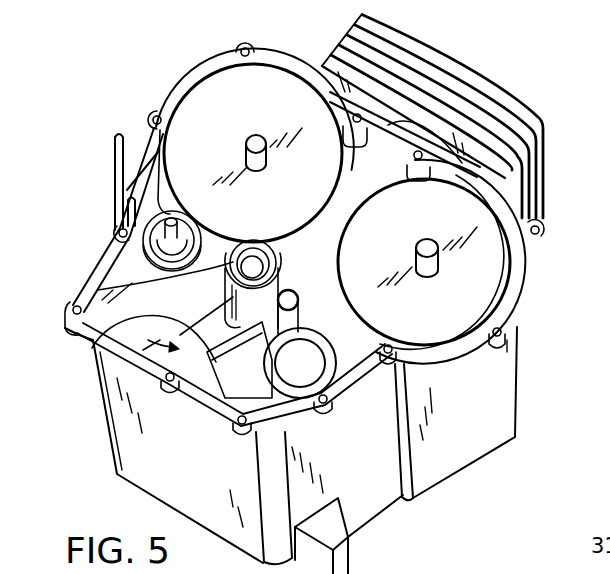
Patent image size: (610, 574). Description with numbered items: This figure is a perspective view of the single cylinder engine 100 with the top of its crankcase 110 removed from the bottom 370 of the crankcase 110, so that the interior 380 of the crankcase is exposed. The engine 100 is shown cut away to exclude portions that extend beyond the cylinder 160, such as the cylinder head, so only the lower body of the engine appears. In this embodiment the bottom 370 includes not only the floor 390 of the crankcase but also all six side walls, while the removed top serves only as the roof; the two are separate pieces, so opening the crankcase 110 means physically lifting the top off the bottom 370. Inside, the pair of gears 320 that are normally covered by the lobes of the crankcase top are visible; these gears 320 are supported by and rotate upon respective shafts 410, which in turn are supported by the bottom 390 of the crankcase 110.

The single cylinder engine 100 is at (103, 48).
The crankcase 110 is at (100, 398).
The cylinder 160 is at (470, 68).
The pair of gears 320 is at (197, 98).
The bottom of the crankcase 370 is at (117, 474).
The interior of the crankcase 380 is at (143, 350).
The floor of the crankcase 390 is at (93, 348).
The shafts 410 is at (134, 282).